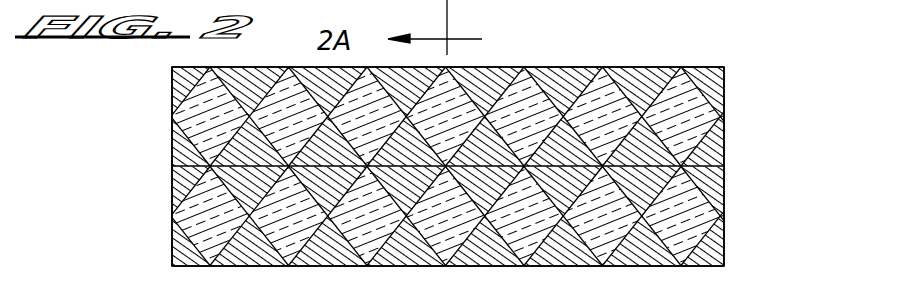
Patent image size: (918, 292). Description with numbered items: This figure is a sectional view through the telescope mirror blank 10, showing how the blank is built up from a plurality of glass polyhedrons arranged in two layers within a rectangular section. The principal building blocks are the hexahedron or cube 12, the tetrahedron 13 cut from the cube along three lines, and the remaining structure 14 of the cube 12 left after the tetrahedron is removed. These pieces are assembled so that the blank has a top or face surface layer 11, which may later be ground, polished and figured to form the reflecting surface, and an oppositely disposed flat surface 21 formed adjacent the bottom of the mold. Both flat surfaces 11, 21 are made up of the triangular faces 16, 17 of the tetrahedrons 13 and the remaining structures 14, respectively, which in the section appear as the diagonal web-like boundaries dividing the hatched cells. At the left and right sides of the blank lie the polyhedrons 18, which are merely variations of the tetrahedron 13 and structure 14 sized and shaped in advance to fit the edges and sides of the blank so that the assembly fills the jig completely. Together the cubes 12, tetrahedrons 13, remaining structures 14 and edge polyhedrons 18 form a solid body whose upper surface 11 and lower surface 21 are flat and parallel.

The telescope mirror blank 10 is at (745, 119).
The face surface layer 11 is at (683, 68).
The cube 12 is at (446, 131).
The tetrahedron 13 is at (446, 230).
The remaining structure of the cube 14 is at (498, 92).
The triangular faces 16 is at (446, 254).
The triangular faces 17 is at (557, 67).
The polyhedrons 18 is at (185, 85).
The flat surface 21 is at (683, 265).